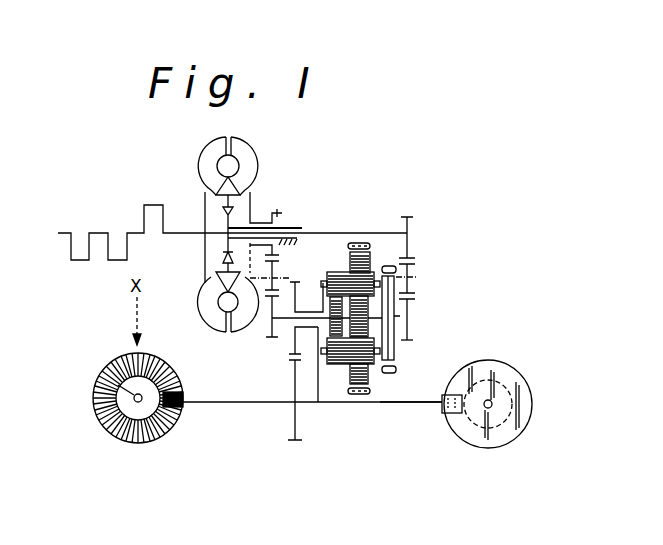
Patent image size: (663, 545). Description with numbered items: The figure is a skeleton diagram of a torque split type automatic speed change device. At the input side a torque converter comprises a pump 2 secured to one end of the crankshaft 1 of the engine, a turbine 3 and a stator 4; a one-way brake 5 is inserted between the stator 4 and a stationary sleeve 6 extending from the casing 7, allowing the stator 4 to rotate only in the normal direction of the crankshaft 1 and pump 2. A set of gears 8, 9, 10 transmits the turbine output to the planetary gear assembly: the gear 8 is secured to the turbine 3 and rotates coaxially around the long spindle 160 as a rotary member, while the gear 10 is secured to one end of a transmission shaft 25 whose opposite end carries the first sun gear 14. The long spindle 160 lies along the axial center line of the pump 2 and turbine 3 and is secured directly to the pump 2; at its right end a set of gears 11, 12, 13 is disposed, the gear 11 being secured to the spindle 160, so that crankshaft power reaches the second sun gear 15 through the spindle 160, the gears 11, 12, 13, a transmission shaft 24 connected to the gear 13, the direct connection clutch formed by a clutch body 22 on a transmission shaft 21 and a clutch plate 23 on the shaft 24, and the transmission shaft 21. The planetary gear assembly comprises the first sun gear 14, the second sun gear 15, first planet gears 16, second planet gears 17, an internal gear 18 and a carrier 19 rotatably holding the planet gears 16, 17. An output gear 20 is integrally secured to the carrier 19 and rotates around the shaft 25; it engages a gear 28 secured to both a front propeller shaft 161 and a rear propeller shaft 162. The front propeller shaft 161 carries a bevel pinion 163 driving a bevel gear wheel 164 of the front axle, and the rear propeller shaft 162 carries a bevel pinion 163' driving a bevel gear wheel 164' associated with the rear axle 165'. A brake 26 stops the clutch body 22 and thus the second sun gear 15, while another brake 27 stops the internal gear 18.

The crankshaft 1 is at (174, 230).
The pump 2 is at (212, 155).
The turbine 3 is at (245, 152).
The stator 4 is at (226, 190).
The one-way brake 5 is at (232, 222).
The stationary sleeve 6 is at (254, 224).
The casing 7 is at (298, 228).
The gear (rotary member) 8 is at (276, 214).
The gear 9 is at (280, 262).
The gear 10 is at (268, 328).
The gear 11 is at (413, 217).
The gear 12 is at (415, 261).
The gear 13 is at (415, 296).
The first sun gear 14 is at (316, 403).
The second sun gear 15 is at (407, 316).
The first planet gears 16 is at (338, 272).
The second planet gears 17 is at (395, 288).
The internal gear 18 is at (378, 285).
The carrier 19 is at (321, 282).
The output gear 20 is at (293, 362).
The transmission shaft 21 is at (376, 300).
The clutch body 22 is at (397, 358).
The clutch plate 23 is at (396, 350).
The transmission shaft 24 is at (410, 331).
The transmission shaft 25 is at (280, 342).
The brake 26 is at (392, 374).
The brake 27 is at (358, 394).
The gear 28 is at (292, 425).
The long spindle 160 is at (350, 243).
The front propeller shaft 161 is at (238, 405).
The rear propeller shaft 162 is at (393, 405).
The bevel pinion 163 is at (186, 427).
The bevel gear wheel 164 is at (124, 408).
The rear axle 165' is at (110, 378).
The bevel pinion 163' is at (484, 366).
The bevel gear wheel 164' is at (502, 415).